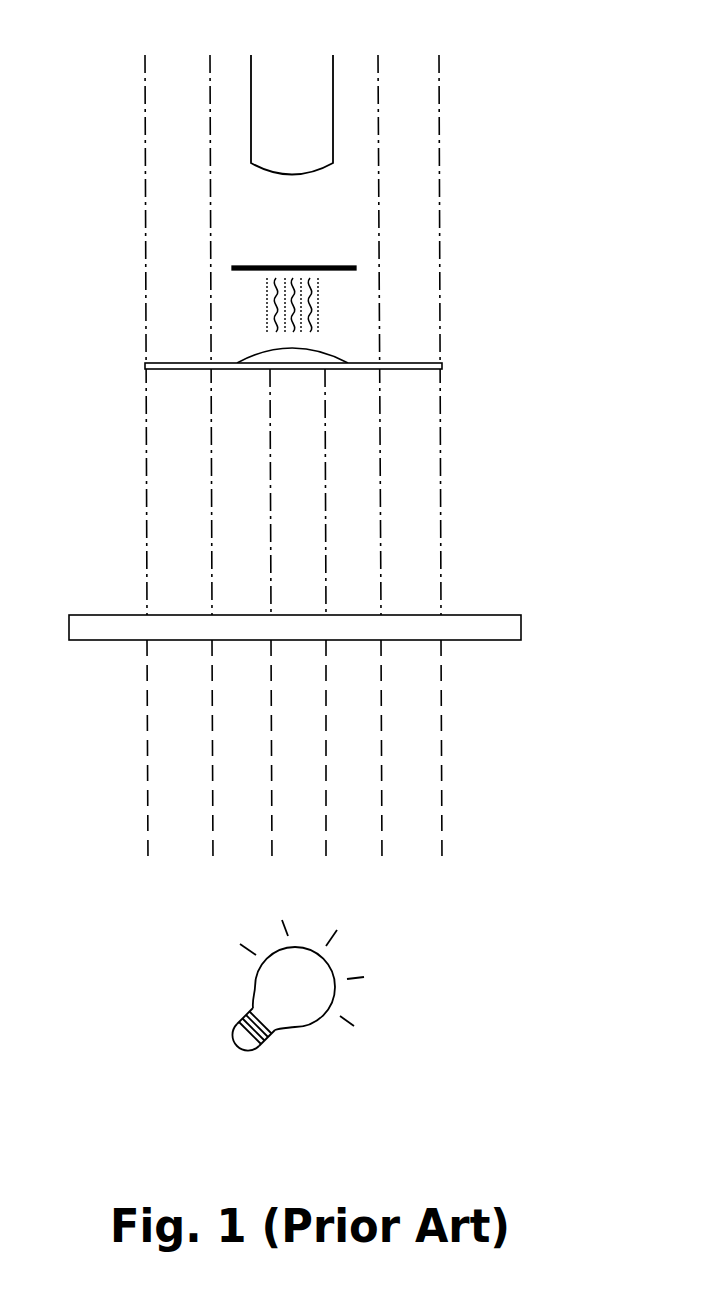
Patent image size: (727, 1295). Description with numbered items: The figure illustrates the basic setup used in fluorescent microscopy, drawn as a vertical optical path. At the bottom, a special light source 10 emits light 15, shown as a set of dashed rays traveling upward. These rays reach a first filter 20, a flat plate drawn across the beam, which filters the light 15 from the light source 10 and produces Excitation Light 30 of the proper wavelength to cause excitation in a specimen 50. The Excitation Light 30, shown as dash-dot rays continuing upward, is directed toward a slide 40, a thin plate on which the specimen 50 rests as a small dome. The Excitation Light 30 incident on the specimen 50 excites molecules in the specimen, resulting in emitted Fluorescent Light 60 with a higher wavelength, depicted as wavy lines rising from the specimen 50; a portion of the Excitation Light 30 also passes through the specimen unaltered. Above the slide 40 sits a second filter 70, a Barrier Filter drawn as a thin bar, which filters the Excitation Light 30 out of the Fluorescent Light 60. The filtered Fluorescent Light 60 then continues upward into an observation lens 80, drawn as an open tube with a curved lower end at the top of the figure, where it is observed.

The light source 10 is at (360, 1003).
The light 15 is at (442, 745).
The first filter 20 is at (521, 622).
The Excitation Light 30 is at (258, 307).
The slide 40 is at (442, 363).
The specimen 50 is at (347, 352).
The Fluorescent Light 60 is at (293, 187).
The second filter 70 is at (250, 267).
The observation lens 80 is at (333, 67).